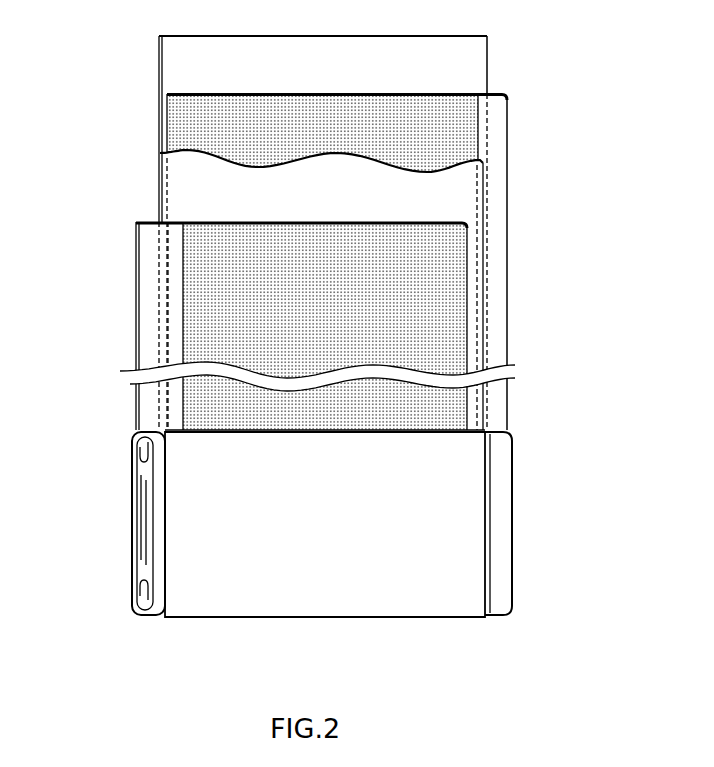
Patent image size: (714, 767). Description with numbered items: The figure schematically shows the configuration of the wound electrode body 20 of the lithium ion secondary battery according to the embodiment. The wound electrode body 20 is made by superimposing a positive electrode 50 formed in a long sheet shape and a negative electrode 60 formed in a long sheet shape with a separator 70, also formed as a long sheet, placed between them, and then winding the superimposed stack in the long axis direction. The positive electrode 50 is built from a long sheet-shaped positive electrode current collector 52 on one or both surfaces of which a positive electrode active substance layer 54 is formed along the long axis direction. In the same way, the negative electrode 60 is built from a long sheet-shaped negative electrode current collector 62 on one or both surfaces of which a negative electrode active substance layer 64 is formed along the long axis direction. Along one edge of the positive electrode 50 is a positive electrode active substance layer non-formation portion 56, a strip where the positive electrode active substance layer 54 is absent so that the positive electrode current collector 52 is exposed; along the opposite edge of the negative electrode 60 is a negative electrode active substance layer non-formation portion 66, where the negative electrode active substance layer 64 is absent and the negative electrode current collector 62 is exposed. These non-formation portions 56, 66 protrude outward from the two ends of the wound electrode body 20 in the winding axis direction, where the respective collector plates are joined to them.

The wound electrode body 20 is at (391, 605).
The positive electrode 50 is at (122, 296).
The positive electrode current collector 52 is at (135, 358).
The positive electrode active substance layer 54 is at (195, 241).
The positive electrode active substance layer non-formation portion 56 is at (150, 328).
The negative electrode 60 is at (508, 168).
The negative electrode current collector 62 is at (508, 268).
The negative electrode active substance layer 64 is at (478, 117).
The negative electrode active substance layer non-formation portion 66 is at (495, 239).
The separator 70 is at (180, 57).